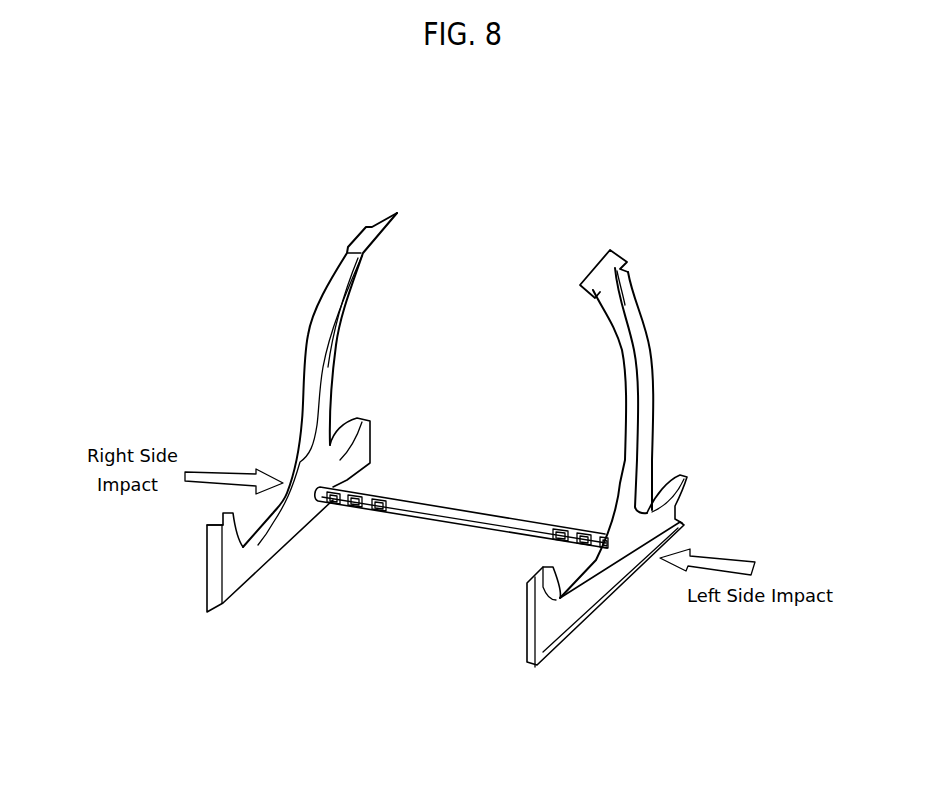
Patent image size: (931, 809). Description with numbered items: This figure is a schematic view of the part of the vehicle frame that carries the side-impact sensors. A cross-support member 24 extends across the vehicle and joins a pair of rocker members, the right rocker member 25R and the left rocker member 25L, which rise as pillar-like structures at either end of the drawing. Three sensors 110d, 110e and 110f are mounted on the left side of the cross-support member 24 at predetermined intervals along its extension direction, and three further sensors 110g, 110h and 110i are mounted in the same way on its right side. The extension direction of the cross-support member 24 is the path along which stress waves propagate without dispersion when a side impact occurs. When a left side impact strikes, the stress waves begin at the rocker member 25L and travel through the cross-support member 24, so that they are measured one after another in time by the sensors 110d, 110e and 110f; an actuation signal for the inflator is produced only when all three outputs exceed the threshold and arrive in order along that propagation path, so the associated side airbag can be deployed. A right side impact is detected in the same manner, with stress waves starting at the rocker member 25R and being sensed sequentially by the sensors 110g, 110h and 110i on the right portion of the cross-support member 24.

The cross-support member 24 is at (433, 507).
The rocker member 25R is at (290, 482).
The rocker member 25L is at (672, 512).
The sensor 110d is at (604, 548).
The sensor 110e is at (583, 546).
The sensor 110f is at (565, 542).
The sensor 110g is at (333, 504).
The sensor 110h is at (356, 508).
The sensor 110i is at (380, 511).